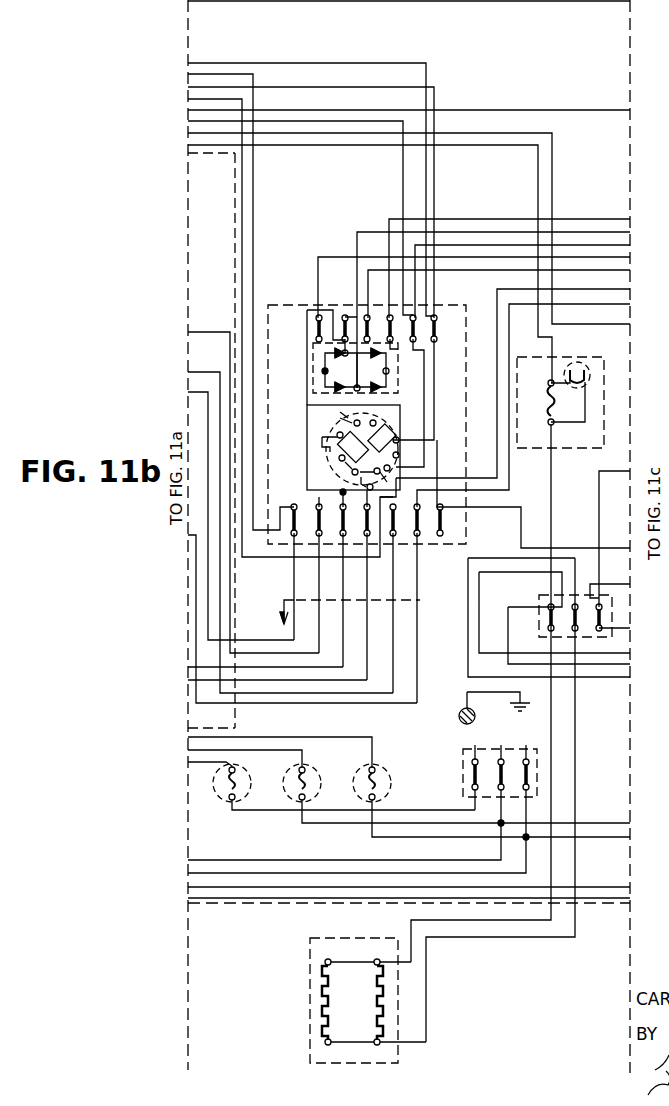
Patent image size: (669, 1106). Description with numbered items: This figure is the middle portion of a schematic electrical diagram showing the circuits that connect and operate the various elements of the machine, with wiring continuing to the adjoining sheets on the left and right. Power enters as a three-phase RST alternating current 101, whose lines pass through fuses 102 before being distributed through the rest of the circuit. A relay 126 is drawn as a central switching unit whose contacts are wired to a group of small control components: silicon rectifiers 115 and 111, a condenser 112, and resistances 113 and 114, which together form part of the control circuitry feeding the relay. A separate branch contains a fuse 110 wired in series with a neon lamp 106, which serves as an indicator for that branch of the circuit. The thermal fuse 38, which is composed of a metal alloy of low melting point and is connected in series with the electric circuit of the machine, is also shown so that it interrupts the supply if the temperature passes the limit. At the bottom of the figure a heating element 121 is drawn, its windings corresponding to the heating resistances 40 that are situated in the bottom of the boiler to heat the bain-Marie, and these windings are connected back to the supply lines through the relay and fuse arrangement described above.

The fuse 38 is at (537, 405).
The resistance 40 is at (352, 1002).
The three-phase RST alternating current 101 is at (444, 759).
The fuse 102 is at (409, 787).
The neon lamp 106 is at (560, 394).
The fuse 110 is at (538, 379).
The silicon rectifier 111 is at (346, 418).
The condenser 112 is at (351, 447).
The resistance 113 is at (365, 485).
The resistance 114 is at (340, 478).
The silicon rectifier 115 is at (402, 371).
The heating element 121 is at (356, 990).
The relay 126 is at (369, 451).